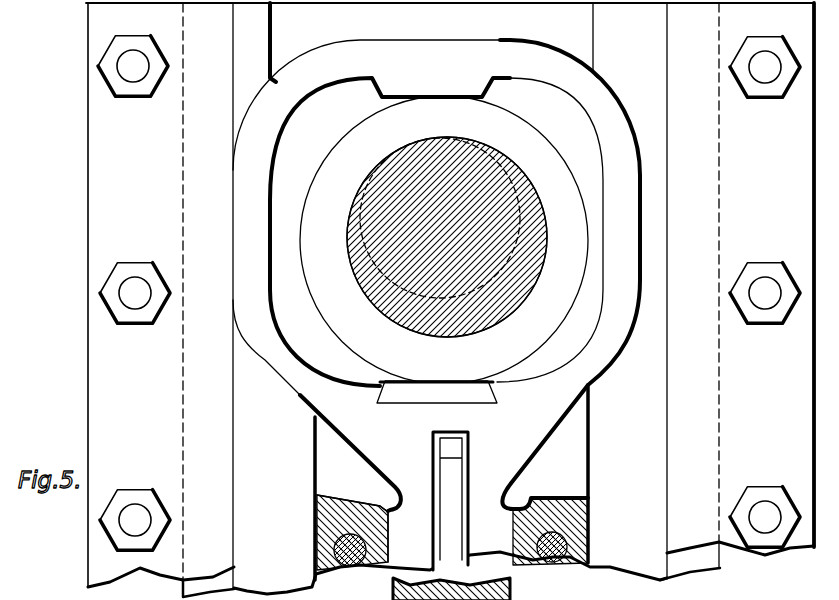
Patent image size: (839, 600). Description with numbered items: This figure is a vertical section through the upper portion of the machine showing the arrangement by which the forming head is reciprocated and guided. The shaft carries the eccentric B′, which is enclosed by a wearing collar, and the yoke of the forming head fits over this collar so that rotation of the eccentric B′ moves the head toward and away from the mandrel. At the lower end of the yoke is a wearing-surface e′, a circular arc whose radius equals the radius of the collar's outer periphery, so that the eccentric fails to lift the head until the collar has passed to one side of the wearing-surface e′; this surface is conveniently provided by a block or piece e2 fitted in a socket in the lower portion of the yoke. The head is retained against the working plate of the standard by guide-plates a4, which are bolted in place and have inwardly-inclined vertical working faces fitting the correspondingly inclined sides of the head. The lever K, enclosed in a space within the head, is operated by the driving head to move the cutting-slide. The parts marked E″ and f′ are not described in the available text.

The guide-plates a4 is at (451, 300).
The collar / clamp E'' is at (436, 194).
The wearing-surface e' is at (436, 232).
The eccentric B' is at (423, 233).
The block or piece e2 is at (452, 393).
The bracket f' is at (450, 444).
The lever K is at (447, 505).